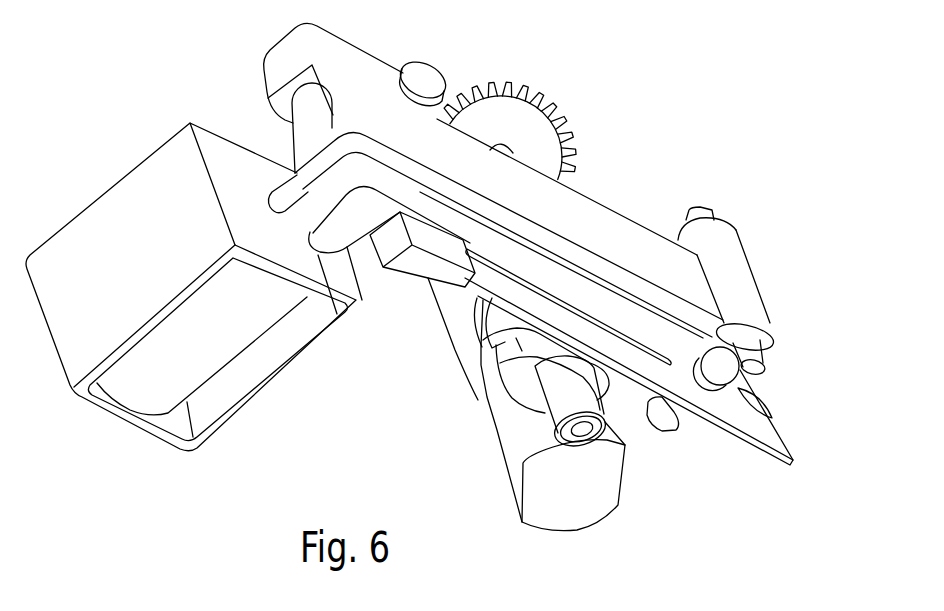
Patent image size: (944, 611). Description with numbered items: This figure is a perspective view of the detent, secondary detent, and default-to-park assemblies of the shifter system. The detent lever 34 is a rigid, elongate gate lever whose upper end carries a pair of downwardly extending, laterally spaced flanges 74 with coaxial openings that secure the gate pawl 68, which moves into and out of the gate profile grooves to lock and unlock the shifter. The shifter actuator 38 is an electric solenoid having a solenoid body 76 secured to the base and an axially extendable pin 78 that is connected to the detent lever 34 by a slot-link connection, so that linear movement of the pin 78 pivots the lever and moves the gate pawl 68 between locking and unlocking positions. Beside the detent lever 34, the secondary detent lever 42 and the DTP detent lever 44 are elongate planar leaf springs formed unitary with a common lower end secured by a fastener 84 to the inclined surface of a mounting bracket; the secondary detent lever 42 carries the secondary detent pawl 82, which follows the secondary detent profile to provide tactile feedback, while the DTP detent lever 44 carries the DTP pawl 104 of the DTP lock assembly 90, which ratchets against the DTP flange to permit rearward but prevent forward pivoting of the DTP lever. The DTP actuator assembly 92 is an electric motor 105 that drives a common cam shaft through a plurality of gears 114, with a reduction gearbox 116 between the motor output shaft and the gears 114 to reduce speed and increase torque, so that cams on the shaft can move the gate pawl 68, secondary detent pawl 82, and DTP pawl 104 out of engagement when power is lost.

The detent lever 34 is at (647, 240).
The shifter actuator 38 is at (224, 379).
The secondary detent lever 42 is at (487, 278).
The DTP detent lever 44 is at (630, 377).
The gate pawl 68 is at (290, 127).
The flanges 74 is at (273, 62).
The solenoid body 76 is at (257, 344).
The pin 78 is at (270, 190).
The secondary detent pawl 82 is at (318, 260).
The fastener 84 is at (717, 388).
The DTP lock assembly 90 is at (403, 278).
The DTP actuator assembly 92 is at (503, 451).
The DTP pawl 104 is at (383, 270).
The electric motor 105 is at (540, 520).
The gears 114 is at (560, 118).
The reduction gearbox 116 is at (460, 365).